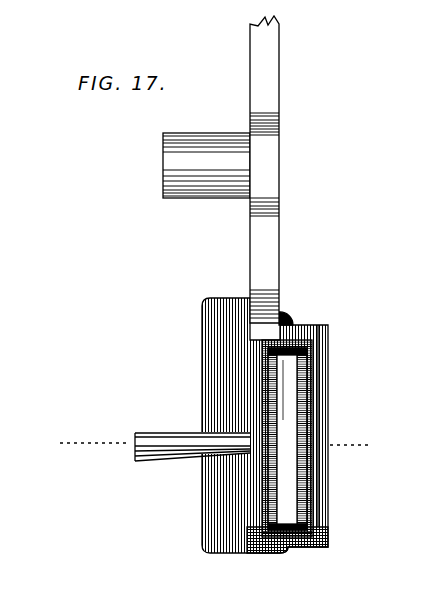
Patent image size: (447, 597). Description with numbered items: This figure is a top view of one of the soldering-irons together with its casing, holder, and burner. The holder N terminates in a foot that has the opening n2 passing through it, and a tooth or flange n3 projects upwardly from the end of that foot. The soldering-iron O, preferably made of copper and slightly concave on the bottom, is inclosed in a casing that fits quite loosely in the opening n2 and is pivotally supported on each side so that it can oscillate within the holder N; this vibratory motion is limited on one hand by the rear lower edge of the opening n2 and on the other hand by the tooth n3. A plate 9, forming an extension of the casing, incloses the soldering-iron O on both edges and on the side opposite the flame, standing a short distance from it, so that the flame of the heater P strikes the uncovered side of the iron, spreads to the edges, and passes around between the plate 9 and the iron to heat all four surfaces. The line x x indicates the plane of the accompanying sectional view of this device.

The holder N is at (270, 263).
The opening n2 is at (298, 345).
The tooth or flange n3 is at (300, 540).
The plate 9 is at (310, 340).
The soldering-iron O is at (272, 412).
The heater or burner P is at (177, 442).
The section line x is at (203, 444).